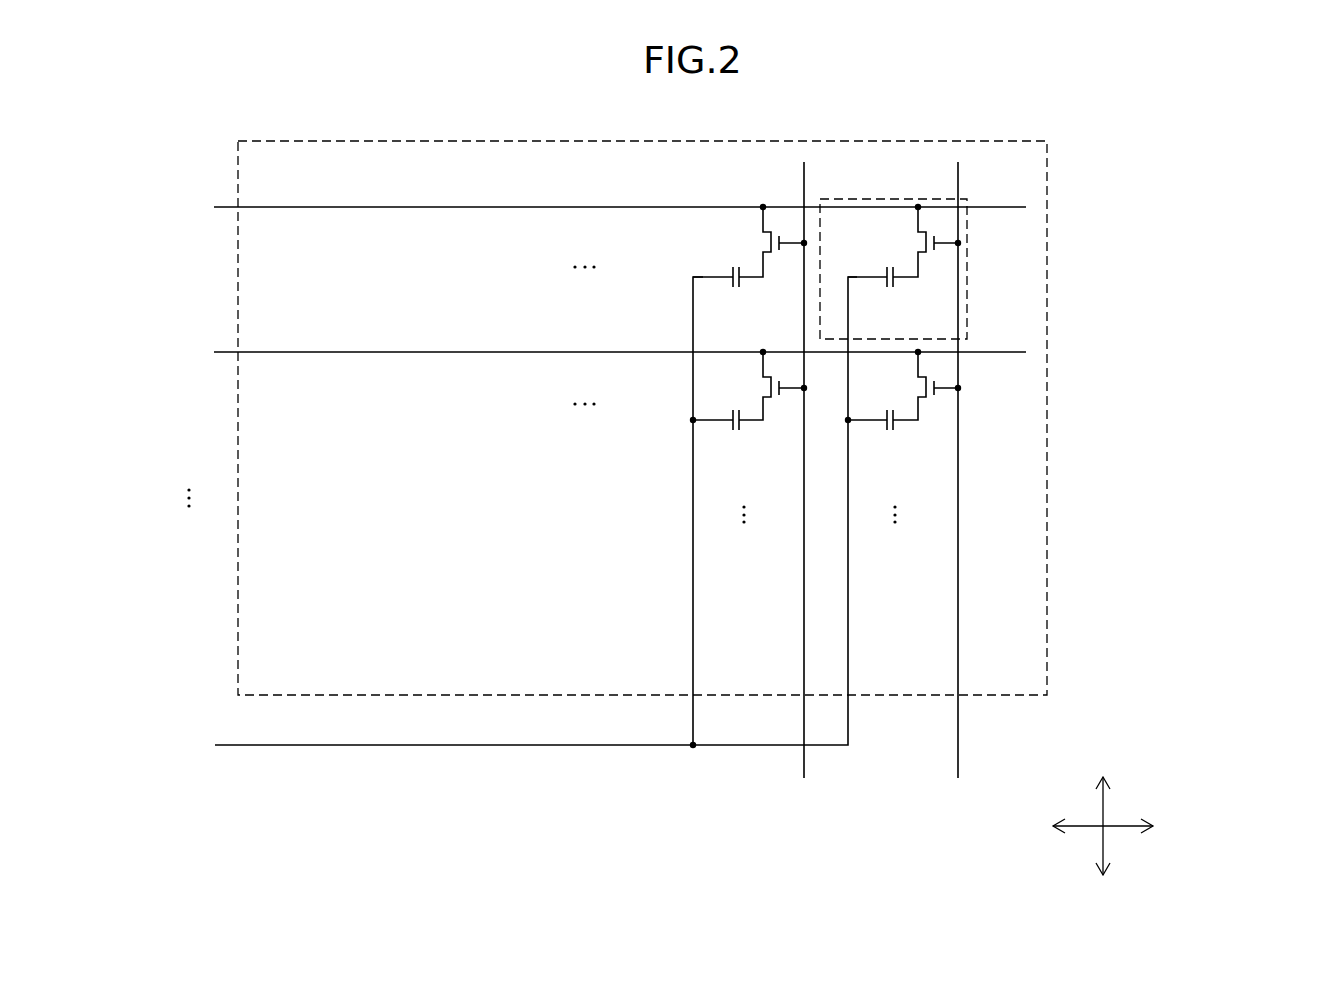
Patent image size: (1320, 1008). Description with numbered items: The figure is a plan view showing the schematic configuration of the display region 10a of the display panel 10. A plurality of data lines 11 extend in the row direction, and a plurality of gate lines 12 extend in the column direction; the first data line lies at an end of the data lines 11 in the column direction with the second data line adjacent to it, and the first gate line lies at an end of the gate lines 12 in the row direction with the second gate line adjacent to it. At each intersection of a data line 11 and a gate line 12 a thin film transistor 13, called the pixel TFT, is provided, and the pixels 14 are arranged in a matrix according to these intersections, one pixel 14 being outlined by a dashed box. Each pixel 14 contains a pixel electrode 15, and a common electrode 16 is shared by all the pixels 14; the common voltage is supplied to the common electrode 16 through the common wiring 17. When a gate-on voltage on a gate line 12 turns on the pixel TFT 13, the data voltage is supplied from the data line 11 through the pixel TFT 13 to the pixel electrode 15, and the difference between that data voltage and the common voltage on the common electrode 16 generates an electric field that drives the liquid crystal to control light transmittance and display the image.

The display panel 10 is at (1098, 122).
The display region 10a is at (968, 140).
The data line 11 is at (448, 207).
The gate line 12 is at (804, 628).
The thin film transistor 13 is at (912, 247).
The pixel 14 is at (970, 281).
The pixel electrode 15 is at (895, 284).
The common electrode 16 is at (885, 284).
The common wiring 17 is at (450, 745).